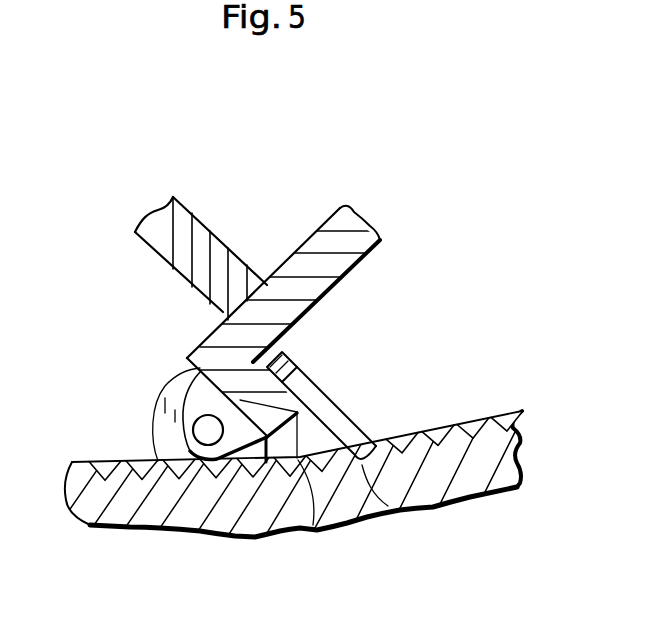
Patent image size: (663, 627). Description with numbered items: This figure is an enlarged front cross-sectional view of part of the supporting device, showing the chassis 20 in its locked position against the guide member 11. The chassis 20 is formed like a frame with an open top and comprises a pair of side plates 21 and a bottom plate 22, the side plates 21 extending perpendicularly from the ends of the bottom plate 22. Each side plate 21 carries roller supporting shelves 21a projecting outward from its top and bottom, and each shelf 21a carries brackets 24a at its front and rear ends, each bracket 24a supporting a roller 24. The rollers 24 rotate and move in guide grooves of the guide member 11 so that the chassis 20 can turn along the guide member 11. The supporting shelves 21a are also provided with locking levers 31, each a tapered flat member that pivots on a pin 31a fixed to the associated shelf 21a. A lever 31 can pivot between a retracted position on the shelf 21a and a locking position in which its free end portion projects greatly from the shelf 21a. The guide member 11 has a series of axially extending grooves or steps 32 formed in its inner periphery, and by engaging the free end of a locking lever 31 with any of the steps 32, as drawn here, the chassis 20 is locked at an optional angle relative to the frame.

The guide member 11 is at (367, 565).
The chassis 20 is at (296, 240).
The side plate 21 is at (340, 260).
The roller supporting shelf 21a is at (302, 532).
The bottom plate 22 is at (180, 248).
The roller 24 is at (172, 422).
The bracket 24a is at (200, 402).
The locking lever 31 is at (328, 401).
The pin 31a is at (302, 367).
The step 32 is at (105, 466).